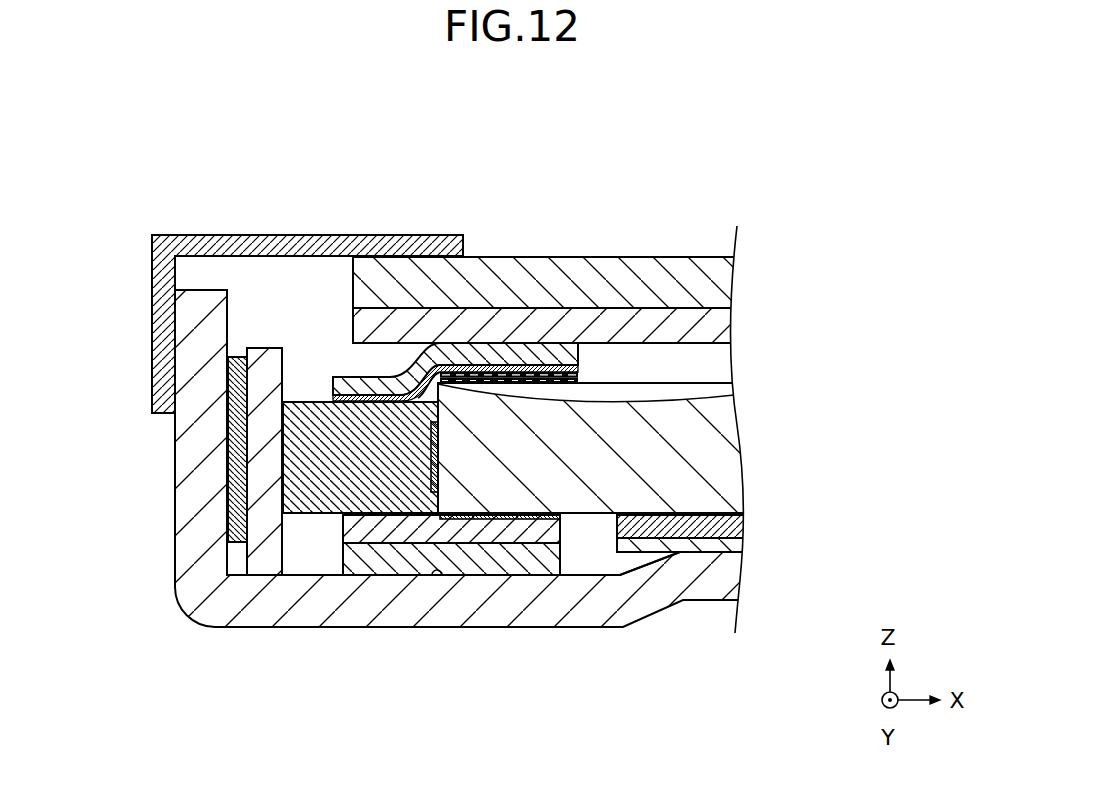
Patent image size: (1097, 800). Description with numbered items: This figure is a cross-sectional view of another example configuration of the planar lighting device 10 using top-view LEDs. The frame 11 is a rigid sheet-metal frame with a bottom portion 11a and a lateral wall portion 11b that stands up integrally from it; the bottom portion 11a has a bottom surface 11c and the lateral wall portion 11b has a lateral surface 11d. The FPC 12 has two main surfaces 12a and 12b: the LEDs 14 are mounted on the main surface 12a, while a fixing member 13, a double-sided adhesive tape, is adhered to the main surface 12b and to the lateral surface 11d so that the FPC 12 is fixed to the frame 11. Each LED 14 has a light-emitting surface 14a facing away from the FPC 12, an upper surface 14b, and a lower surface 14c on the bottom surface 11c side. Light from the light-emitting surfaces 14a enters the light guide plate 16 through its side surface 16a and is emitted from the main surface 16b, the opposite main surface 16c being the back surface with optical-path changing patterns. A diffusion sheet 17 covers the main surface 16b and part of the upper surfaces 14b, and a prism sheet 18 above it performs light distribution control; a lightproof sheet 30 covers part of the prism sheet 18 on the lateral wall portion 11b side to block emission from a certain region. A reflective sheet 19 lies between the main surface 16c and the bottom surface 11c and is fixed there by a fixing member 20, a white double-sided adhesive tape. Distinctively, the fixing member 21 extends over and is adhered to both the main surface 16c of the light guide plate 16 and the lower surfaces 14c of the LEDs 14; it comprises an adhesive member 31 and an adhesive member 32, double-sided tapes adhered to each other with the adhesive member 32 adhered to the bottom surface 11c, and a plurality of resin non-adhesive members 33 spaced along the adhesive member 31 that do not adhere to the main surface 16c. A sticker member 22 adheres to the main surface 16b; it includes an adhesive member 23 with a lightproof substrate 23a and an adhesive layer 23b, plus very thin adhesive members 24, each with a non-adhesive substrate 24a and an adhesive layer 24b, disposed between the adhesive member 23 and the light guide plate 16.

The planar lighting device 10 is at (755, 177).
The frame 11 is at (727, 645).
The bottom portion 11a is at (728, 580).
The lateral wall portion 11b is at (183, 487).
The bottom surface 11c is at (437, 580).
The lateral surface 11d is at (233, 346).
The FPC 12 is at (236, 562).
The main surface 12a is at (283, 352).
The main surface 12b is at (234, 352).
The fixing member 13 is at (238, 527).
The LEDs 14 is at (358, 462).
The light-emitting surface 14a is at (430, 476).
The upper surfaces 14b is at (313, 398).
The lower surfaces 14c is at (308, 522).
The light guide plate 16 is at (718, 452).
The side surface 16a is at (690, 401).
The main surface 16b is at (648, 383).
The main surface 16c is at (662, 511).
The diffusion sheet 17 is at (712, 322).
The prism sheet 18 is at (718, 277).
The reflective sheet 19 is at (745, 518).
The fixing member 20 is at (742, 545).
The fixing member 21 is at (473, 710).
The sticker member 22 is at (360, 140).
The adhesive member 23 is at (338, 185).
The substrate 23a is at (380, 377).
The adhesive layer 23b is at (428, 390).
The adhesive members 24 is at (490, 185).
The substrate 24a is at (566, 360).
The adhesive layer 24b is at (504, 367).
The lightproof sheet 30 is at (152, 398).
The adhesive member 31 is at (540, 528).
The adhesive member 32 is at (493, 554).
The non-adhesive members 33 is at (554, 520).